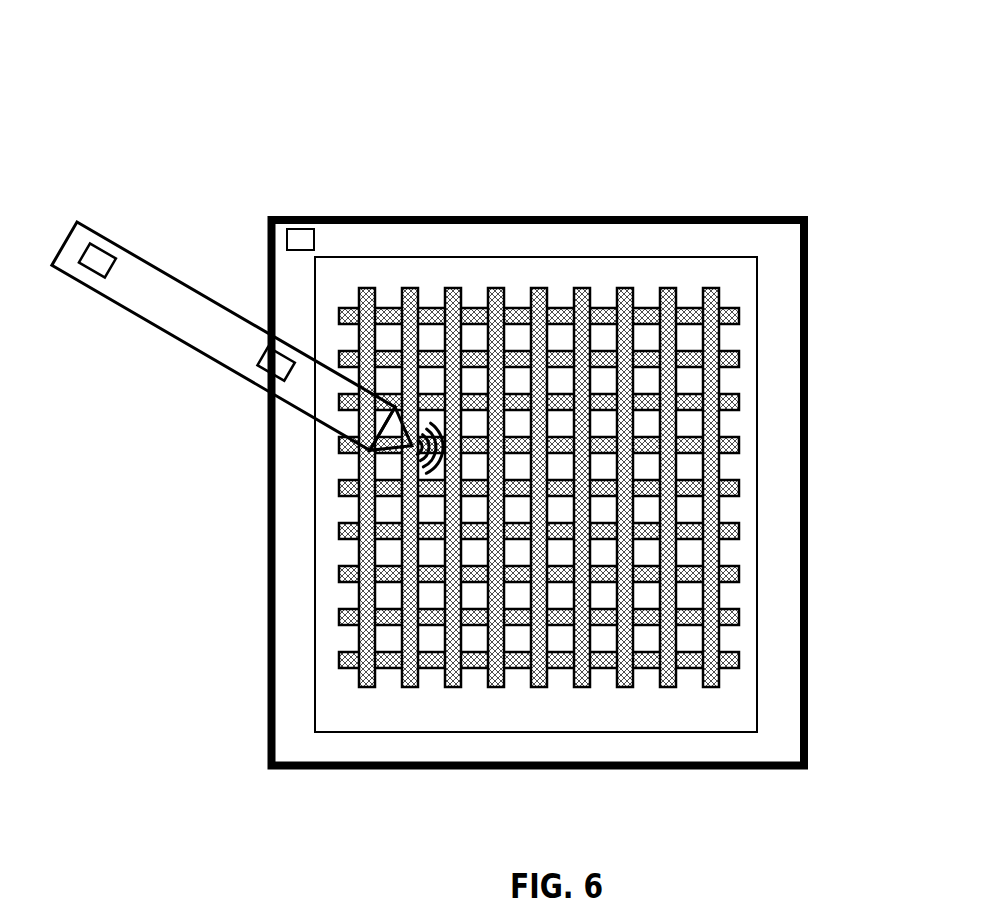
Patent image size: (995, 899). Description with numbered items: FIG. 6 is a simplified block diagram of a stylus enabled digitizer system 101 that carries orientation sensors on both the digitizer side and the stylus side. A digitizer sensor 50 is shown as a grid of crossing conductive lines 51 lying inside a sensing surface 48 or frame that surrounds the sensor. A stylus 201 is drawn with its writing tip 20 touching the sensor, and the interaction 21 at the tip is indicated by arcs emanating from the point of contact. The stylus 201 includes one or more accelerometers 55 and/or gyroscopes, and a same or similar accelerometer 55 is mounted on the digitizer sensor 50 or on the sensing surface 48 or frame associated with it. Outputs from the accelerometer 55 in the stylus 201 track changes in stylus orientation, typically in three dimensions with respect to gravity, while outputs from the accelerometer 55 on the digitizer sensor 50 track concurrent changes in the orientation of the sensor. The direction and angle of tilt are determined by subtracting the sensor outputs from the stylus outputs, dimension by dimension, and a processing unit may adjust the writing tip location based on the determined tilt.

The touch sensing system 101 is at (530, 95).
The sensing surface 48 is at (703, 217).
The digitizer sensor 50 is at (760, 320).
The sensing electrodes 51 is at (620, 292).
The accelerometer 55 is at (100, 260).
The stylus 201 is at (228, 308).
The stylus tip 20 is at (412, 447).
The emitted signal 21 is at (313, 448).